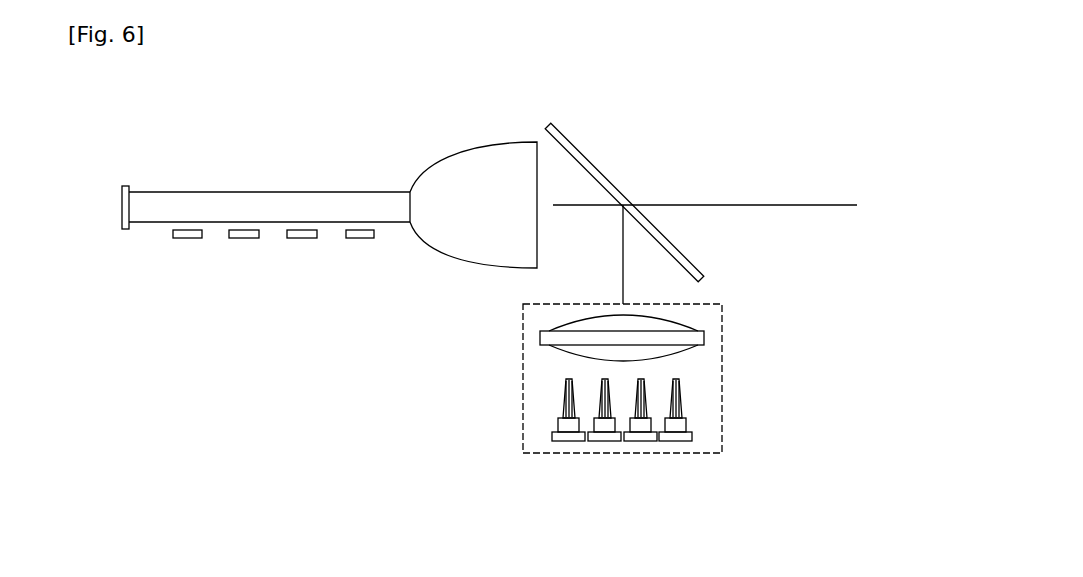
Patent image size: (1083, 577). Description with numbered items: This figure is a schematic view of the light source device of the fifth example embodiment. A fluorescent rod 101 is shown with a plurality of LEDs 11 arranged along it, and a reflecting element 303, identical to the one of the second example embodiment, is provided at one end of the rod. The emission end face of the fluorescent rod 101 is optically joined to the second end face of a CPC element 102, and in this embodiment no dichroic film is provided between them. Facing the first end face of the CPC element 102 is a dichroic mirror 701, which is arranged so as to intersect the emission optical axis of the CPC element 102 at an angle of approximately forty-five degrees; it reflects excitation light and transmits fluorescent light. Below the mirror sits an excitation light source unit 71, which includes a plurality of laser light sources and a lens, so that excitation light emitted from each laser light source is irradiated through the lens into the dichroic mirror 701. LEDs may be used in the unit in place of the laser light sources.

The reflecting element 303 is at (124, 231).
The fluorescent rod 101 is at (306, 197).
The LEDs 11 is at (350, 238).
The CPC element 102 is at (472, 158).
The dichroic mirror 701 is at (553, 128).
The excitation light source unit 71 is at (547, 454).